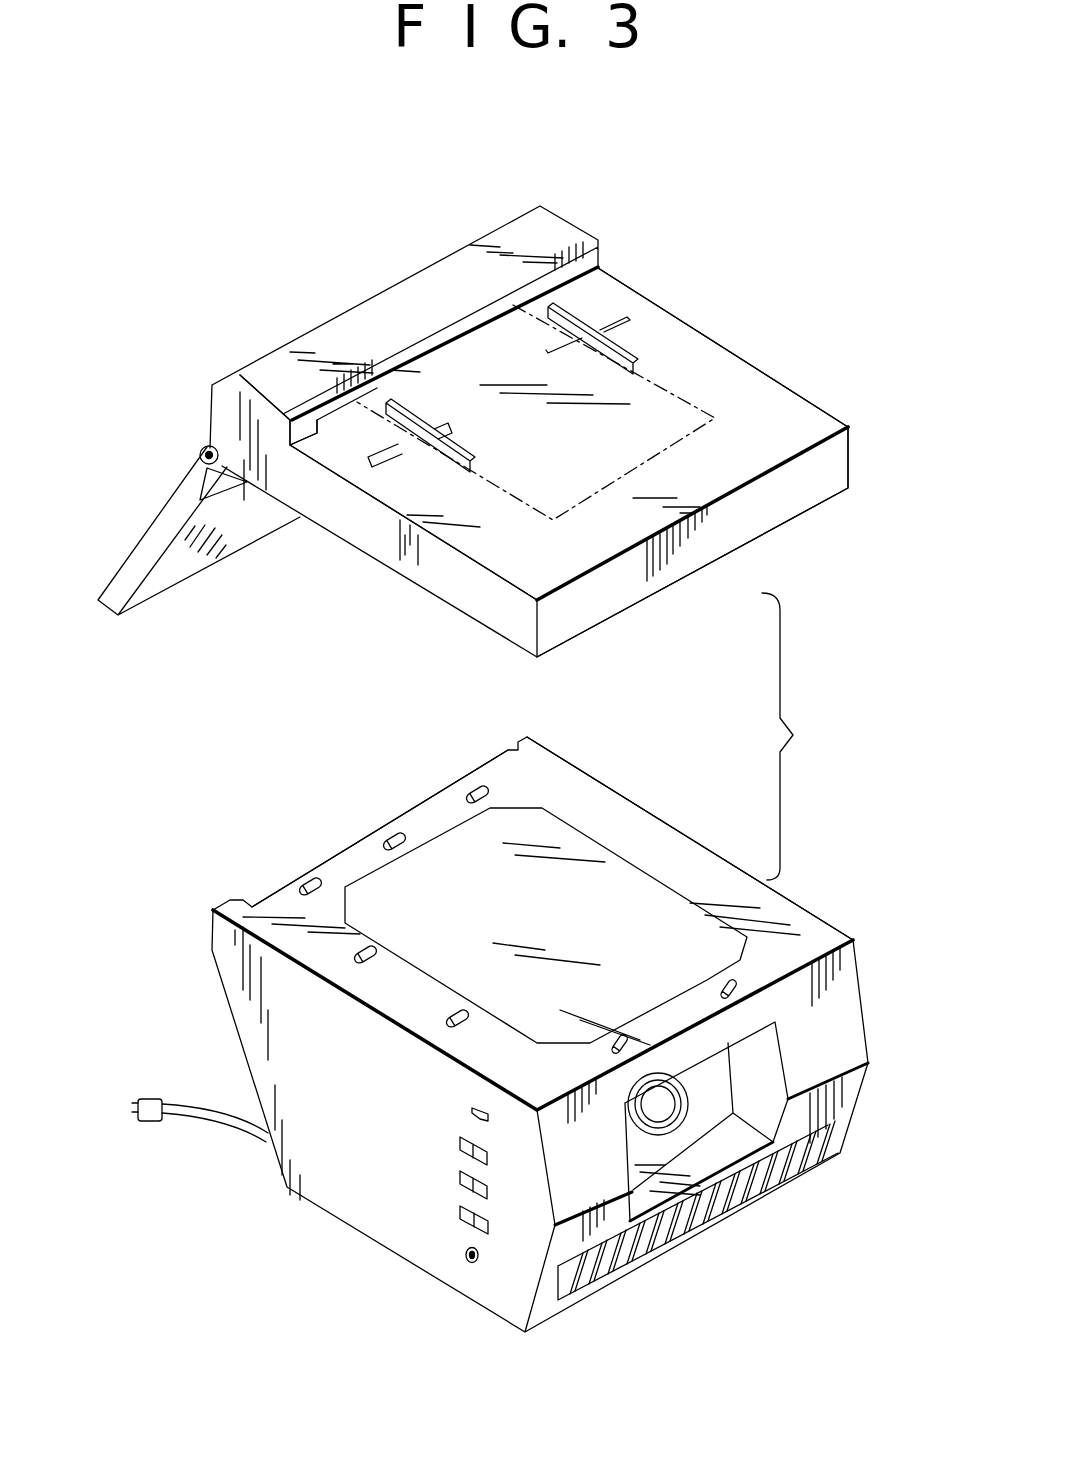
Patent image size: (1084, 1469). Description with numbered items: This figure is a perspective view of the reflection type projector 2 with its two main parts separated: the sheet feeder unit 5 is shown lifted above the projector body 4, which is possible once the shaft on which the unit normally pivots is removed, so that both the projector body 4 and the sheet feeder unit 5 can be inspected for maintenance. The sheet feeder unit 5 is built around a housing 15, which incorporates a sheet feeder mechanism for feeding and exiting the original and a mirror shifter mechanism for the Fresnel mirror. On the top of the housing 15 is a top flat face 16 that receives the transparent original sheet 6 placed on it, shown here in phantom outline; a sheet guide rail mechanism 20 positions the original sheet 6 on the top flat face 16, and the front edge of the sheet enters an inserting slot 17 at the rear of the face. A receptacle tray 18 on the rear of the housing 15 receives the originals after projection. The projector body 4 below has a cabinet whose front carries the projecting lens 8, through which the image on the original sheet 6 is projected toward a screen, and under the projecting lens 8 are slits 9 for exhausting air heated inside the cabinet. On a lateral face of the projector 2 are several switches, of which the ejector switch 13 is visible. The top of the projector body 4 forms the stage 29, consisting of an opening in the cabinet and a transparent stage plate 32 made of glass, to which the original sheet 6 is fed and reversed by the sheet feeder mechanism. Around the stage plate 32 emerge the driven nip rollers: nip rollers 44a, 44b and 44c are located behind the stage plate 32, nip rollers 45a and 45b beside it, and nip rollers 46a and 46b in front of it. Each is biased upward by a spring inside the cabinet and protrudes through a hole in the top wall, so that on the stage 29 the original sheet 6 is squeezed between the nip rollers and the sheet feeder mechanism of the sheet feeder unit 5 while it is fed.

The projector 2 is at (790, 736).
The projector body 4 is at (736, 870).
The sheet feeder unit 5 is at (743, 520).
The original sheet 6 is at (686, 456).
The projecting lens 8 is at (672, 1105).
The slits 9 is at (702, 1214).
The ejector switch 13 is at (467, 1264).
The housing 15 is at (845, 462).
The top flat face 16 is at (742, 368).
The inserting slot 17 is at (413, 377).
The receptacle tray 18 is at (264, 522).
The sheet guide rail mechanism 20 is at (630, 350).
The stage 29 is at (673, 840).
The transparent stage plate 32 is at (605, 853).
The nip roller 44a is at (477, 786).
The nip roller 44b is at (392, 836).
The nip roller 44c is at (313, 877).
The nip roller 45a is at (360, 963).
The nip roller 45b is at (456, 1022).
The nip roller 46a is at (745, 982).
The nip roller 46b is at (628, 1052).